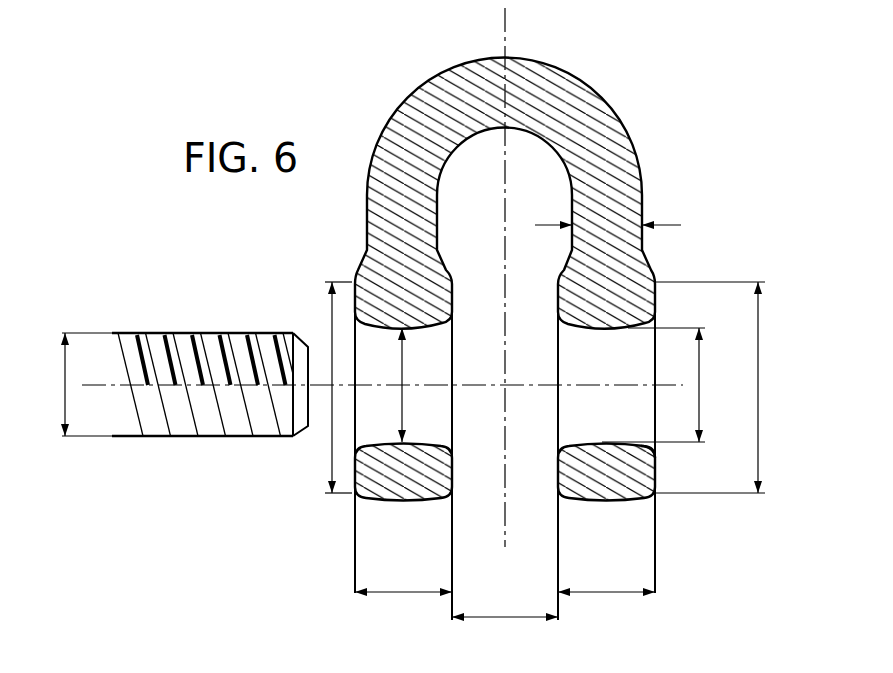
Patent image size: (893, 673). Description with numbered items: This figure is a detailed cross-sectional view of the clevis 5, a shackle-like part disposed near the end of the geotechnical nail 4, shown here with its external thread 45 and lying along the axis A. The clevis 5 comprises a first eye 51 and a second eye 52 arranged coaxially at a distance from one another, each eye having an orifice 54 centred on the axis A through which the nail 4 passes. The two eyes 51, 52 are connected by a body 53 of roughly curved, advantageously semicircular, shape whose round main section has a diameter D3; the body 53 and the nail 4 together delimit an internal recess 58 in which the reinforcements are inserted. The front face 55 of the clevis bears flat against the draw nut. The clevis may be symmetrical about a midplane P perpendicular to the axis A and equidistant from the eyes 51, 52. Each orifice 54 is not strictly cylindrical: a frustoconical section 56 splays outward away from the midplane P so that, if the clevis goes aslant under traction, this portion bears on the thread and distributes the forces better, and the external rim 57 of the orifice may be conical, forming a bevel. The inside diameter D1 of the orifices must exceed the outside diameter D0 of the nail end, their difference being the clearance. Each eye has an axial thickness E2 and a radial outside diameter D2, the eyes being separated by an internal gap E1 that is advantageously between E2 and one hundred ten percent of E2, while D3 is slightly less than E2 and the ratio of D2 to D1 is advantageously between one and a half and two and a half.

The nail 4 is at (210, 333).
The external thread 45 is at (242, 353).
The clevis 5 is at (538, 314).
The first eye 51 is at (407, 483).
The second eye 52 is at (610, 483).
The body 53 is at (557, 68).
The orifice 54 is at (567, 418).
The front face 55 is at (653, 297).
The frustoconical section 56 is at (388, 442).
The external rim 57 is at (655, 445).
The internal recess 58 is at (482, 170).
The outside diameter of the nail end portion D0 is at (70, 384).
The inside diameter of the orifices D1 is at (567, 385).
The radial outside diameter of the eyes D2 is at (545, 387).
The diameter of the body section D3 is at (625, 226).
The internal gap E1 is at (505, 630).
The axial thickness of the eyes E2 is at (505, 606).
The midplane P is at (503, 23).
The axis A is at (479, 388).